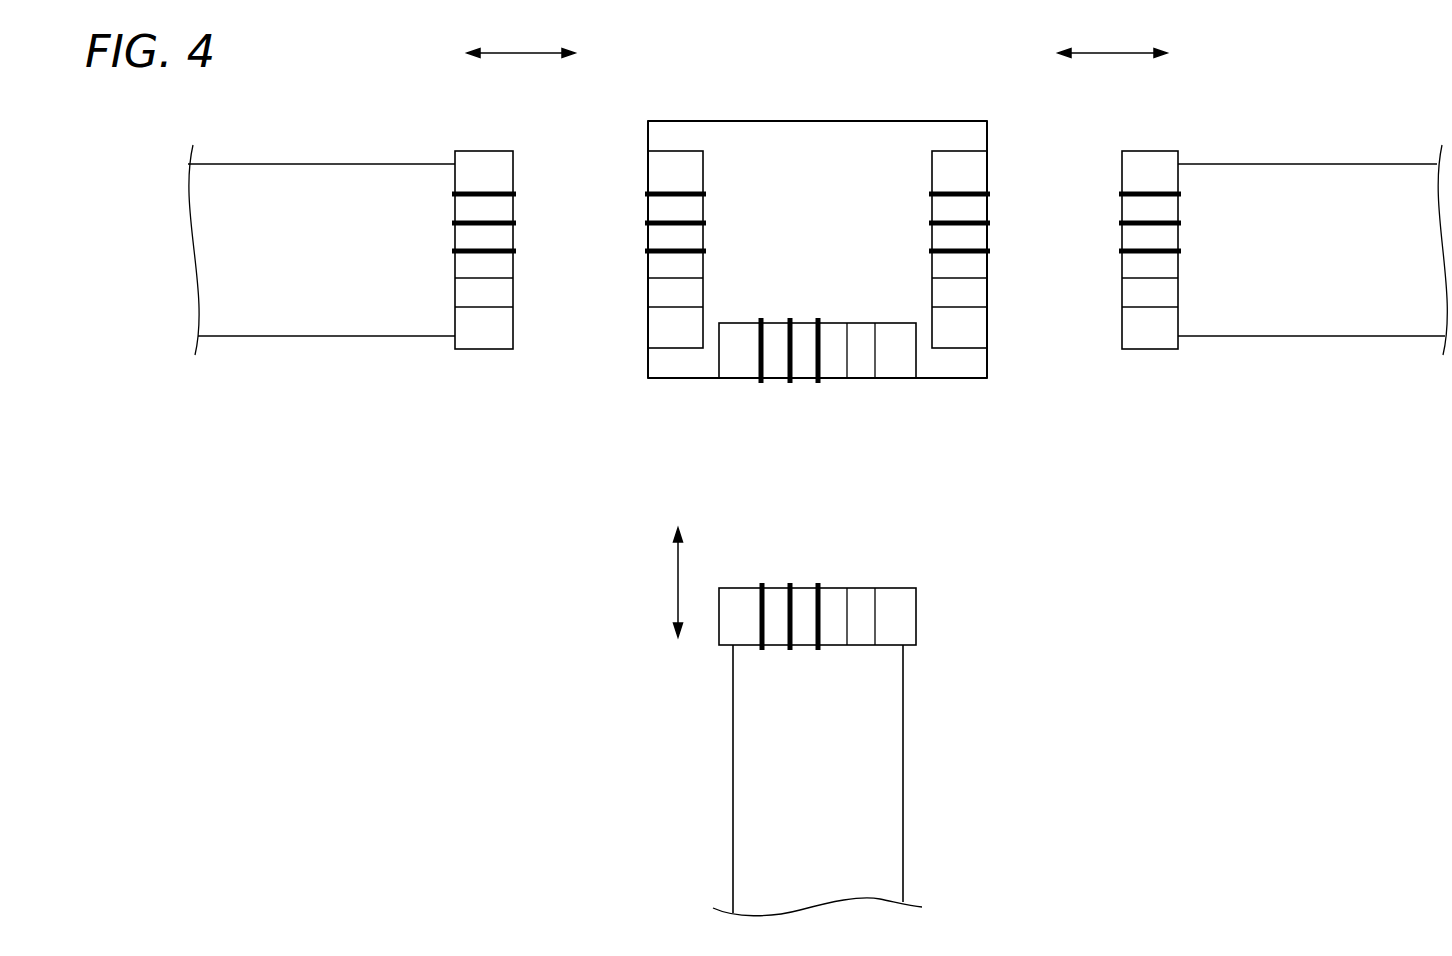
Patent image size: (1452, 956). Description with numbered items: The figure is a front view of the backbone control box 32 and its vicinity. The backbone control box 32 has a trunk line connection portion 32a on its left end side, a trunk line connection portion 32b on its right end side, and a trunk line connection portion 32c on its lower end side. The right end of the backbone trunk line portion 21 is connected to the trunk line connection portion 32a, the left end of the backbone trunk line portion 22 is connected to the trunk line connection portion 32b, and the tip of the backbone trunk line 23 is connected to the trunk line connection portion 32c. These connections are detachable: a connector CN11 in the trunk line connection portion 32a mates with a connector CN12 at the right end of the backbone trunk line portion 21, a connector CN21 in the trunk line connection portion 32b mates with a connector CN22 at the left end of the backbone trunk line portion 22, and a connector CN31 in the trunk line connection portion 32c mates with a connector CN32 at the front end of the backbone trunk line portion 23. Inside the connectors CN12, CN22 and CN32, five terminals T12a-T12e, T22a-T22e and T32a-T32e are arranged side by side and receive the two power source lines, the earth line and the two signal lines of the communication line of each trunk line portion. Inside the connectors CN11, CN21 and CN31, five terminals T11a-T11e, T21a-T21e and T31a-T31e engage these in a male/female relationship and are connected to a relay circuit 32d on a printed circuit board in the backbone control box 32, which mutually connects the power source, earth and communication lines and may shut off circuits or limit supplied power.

The backbone trunk line portion 21 is at (322, 180).
The backbone trunk line portion 22 is at (1305, 182).
The backbone trunk line 23 is at (750, 769).
The backbone control box 32 is at (803, 118).
The trunk line connection portion 32a is at (663, 173).
The trunk line connection portion 32b is at (974, 175).
The trunk line connection portion 32c is at (740, 365).
The relay circuit 32d is at (868, 137).
The connector CN11 is at (675, 330).
The connector CN12 is at (486, 335).
The connector CN21 is at (961, 330).
The connector CN22 is at (1152, 335).
The connector CN31 is at (895, 368).
The connector CN32 is at (900, 617).
The terminals T11a-T11e is at (693, 218).
The terminals T12a-T12e is at (473, 220).
The terminals T21a-T21e is at (940, 218).
The terminals T22a-T22e is at (1159, 218).
The terminals T31a-T31e is at (847, 357).
The terminals T32a-T32e is at (843, 600).